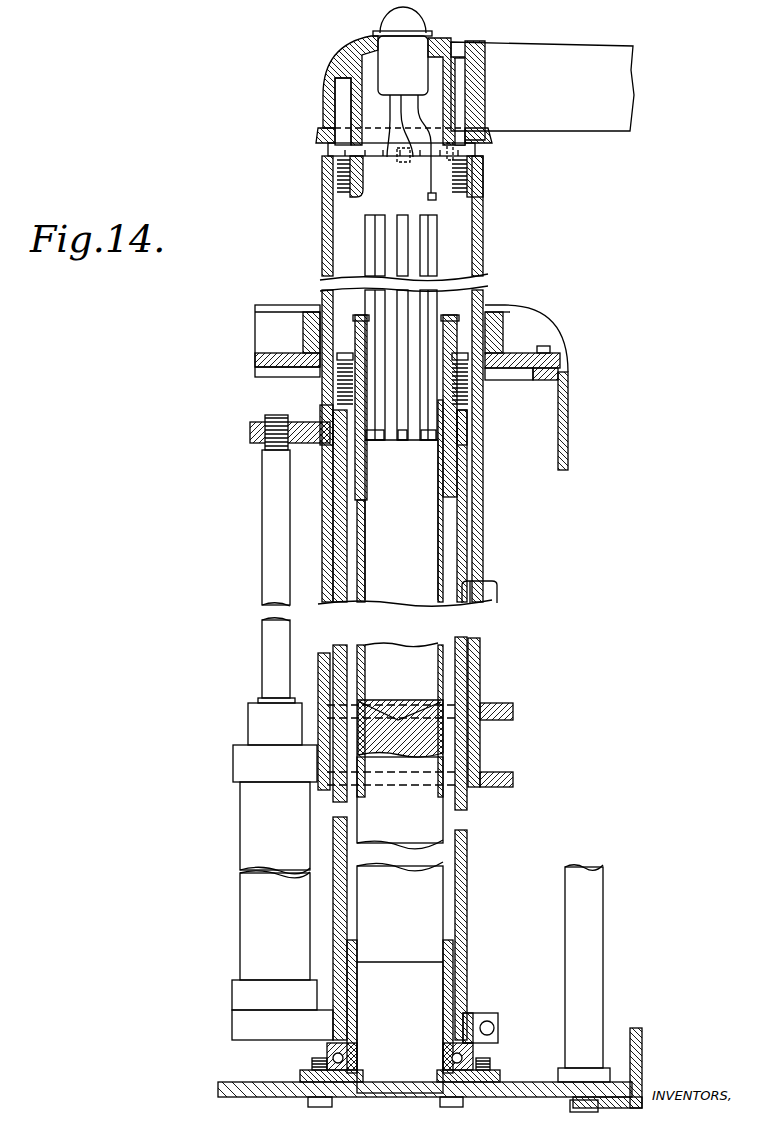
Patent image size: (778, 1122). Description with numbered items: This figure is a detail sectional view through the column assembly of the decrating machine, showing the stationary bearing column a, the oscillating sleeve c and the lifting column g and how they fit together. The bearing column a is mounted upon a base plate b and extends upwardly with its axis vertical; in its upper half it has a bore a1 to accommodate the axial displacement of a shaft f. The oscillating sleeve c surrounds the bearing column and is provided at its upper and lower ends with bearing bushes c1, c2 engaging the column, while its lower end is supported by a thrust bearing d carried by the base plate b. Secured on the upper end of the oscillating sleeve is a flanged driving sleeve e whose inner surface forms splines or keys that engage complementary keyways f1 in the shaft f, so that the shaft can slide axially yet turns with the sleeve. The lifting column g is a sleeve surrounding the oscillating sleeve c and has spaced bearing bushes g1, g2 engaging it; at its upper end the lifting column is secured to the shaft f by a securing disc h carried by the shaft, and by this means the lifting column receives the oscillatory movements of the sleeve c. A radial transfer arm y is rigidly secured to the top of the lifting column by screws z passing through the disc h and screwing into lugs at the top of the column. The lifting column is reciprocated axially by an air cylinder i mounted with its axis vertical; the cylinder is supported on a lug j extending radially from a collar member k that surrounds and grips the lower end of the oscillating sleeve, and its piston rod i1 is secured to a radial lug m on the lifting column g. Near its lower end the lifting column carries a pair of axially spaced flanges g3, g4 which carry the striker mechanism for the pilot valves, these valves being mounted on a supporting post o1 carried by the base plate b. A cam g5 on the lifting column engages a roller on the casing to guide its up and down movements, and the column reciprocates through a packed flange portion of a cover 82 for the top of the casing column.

The screws z is at (347, 102).
The radial transfer arm y is at (532, 113).
The securing disc h is at (340, 152).
The shaft f is at (432, 240).
The cover 82 is at (283, 360).
The flanged driving sleeve e is at (447, 333).
The bearing bush g1 is at (323, 420).
The radial lug m is at (250, 433).
The lifting column g is at (323, 513).
The bearing bush c1 is at (463, 433).
The grooves or keyways f1 is at (380, 440).
The piston rod i1 is at (270, 568).
The oscillating sleeve c is at (467, 537).
The stationary bearing column a is at (442, 567).
The bore a1 is at (413, 590).
The cam g5 is at (488, 593).
The bearing bush g2 is at (327, 727).
The flange g3 is at (513, 712).
The flange g4 is at (513, 778).
The air cylinder i is at (257, 833).
The supporting post o1 is at (588, 910).
The bearing bush c2 is at (448, 975).
The collar member k is at (467, 1043).
The thrust bearing d is at (473, 1057).
The lug j is at (247, 1022).
The base plate b is at (220, 1087).